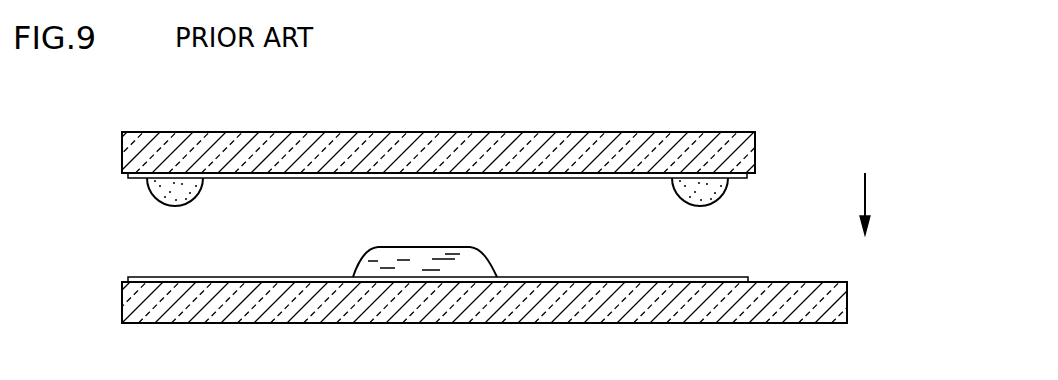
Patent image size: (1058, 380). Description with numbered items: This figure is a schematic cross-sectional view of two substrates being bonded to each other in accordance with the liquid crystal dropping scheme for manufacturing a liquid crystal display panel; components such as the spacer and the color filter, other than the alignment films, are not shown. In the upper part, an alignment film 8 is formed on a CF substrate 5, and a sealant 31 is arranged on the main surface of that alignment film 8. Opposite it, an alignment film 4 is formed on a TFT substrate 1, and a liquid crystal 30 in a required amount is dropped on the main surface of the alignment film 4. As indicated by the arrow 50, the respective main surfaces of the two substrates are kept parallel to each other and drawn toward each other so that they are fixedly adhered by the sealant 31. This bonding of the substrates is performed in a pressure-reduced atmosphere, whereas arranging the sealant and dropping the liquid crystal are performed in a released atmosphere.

The TFT substrate 1 is at (232, 310).
The alignment film 4 is at (300, 282).
The liquid crystal 30 is at (454, 265).
The CF substrate 5 is at (213, 143).
The alignment film 8 is at (312, 175).
The sealant 31 is at (698, 185).
The arrow 50 is at (868, 193).